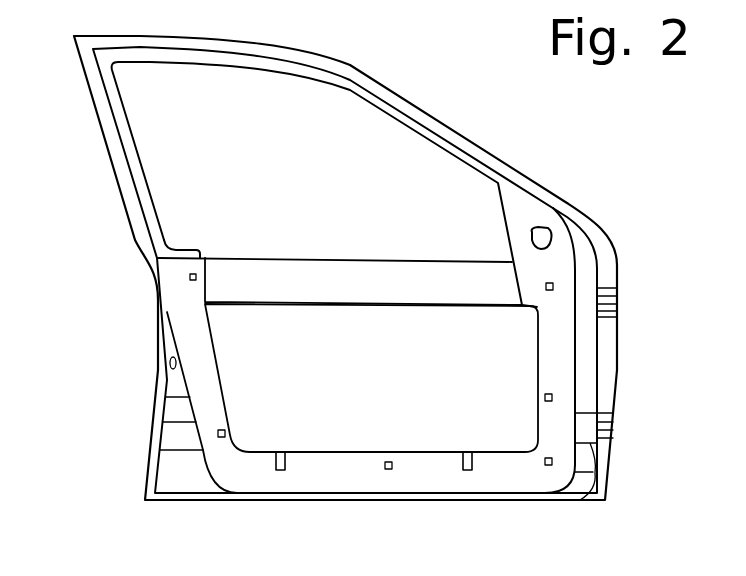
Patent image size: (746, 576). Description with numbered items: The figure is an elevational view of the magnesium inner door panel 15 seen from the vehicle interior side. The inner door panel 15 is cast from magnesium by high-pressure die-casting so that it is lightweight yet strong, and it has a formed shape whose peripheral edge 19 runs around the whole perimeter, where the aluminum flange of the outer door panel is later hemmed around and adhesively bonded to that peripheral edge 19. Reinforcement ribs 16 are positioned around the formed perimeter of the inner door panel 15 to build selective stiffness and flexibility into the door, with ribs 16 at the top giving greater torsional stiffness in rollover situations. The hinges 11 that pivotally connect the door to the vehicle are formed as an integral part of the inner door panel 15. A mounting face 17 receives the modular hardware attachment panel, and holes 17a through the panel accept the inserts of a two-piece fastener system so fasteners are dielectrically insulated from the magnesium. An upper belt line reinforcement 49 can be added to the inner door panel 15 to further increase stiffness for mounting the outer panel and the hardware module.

The inner door panel 15 is at (563, 140).
The peripheral edge 19 is at (133, 232).
The hinges 11 is at (613, 323).
The reinforcement ribs 16 is at (185, 452).
The mounting face 17 is at (341, 468).
The holes 17a is at (194, 283).
The upper belt line reinforcement 49 is at (378, 270).